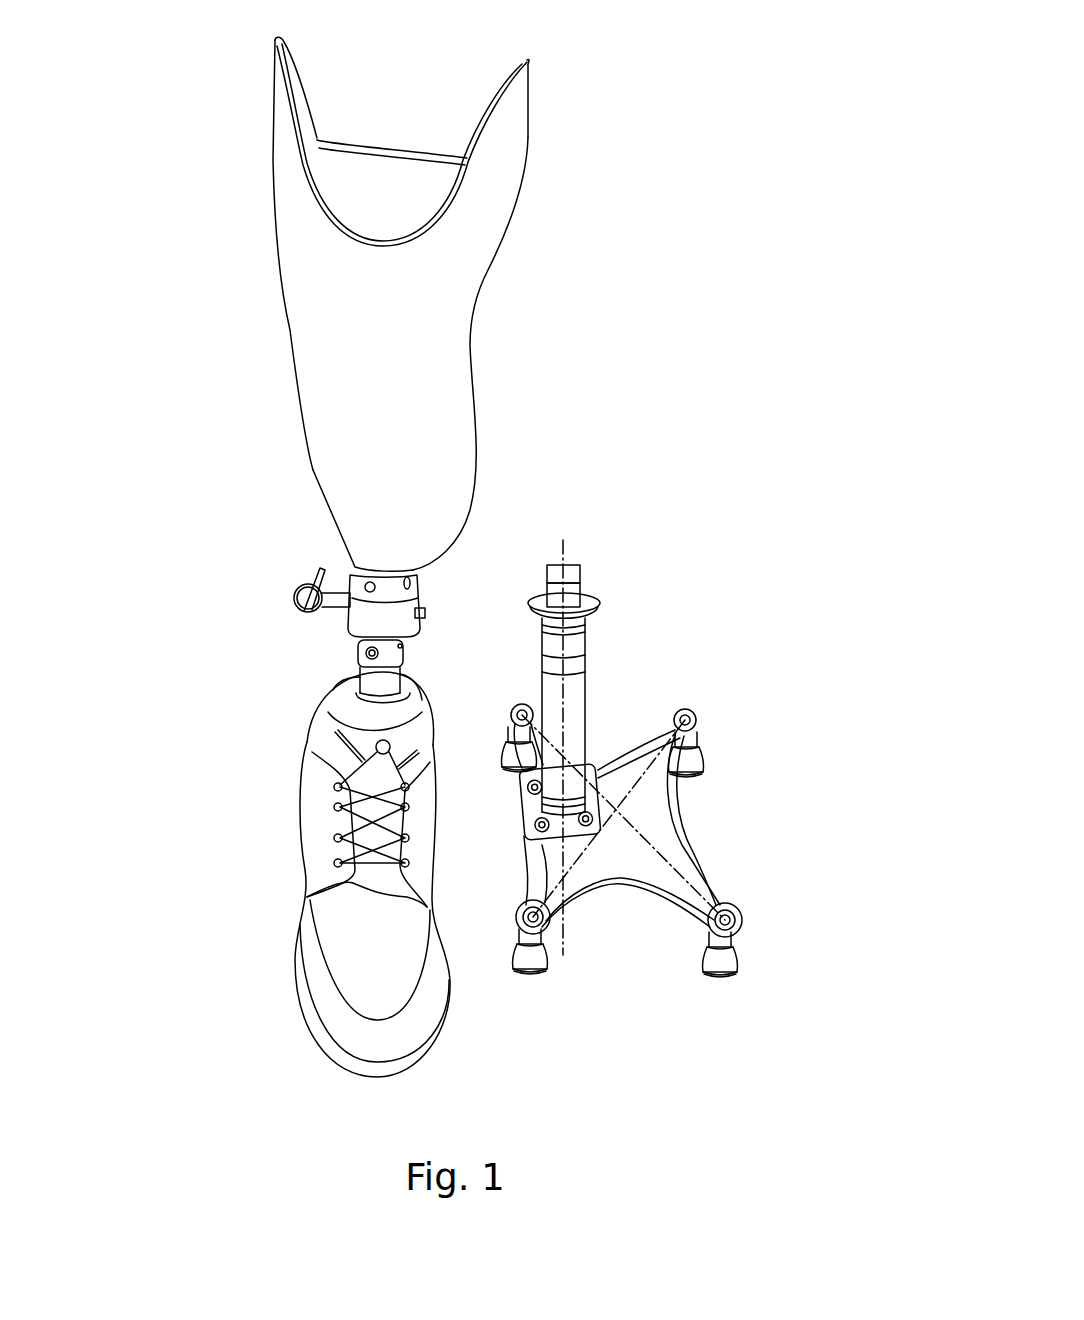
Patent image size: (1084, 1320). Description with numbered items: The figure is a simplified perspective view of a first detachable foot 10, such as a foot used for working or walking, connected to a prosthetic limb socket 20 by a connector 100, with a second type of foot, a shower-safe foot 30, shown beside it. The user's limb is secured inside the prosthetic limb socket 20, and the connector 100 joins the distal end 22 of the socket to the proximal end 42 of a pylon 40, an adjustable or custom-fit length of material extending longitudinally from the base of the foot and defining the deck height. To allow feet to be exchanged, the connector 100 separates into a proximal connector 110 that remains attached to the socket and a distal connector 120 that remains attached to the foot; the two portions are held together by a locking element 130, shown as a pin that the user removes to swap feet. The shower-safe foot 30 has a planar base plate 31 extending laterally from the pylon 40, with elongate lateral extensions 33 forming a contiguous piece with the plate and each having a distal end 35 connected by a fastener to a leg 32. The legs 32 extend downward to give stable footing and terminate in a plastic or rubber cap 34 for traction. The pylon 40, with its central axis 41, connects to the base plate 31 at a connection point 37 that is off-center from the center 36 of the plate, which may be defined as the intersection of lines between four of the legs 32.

The detachable foot 10 is at (333, 1043).
The prosthetic limb socket 20 is at (298, 295).
The distal end of the prosthetic limb socket 22 is at (358, 555).
The shower-safe foot 30 is at (655, 863).
The base plate 31 is at (627, 857).
The legs 32 is at (735, 947).
The lateral extensions 33 is at (523, 708).
The cap 34 is at (722, 975).
The distal end of the lateral extension 35 is at (532, 912).
The center of the base plate 36 is at (620, 808).
The connection point 37 is at (522, 777).
The pylon 40 is at (587, 721).
The central axis of the pylon 41 is at (568, 945).
The proximal end of the pylon 42 is at (597, 665).
The connector 100 is at (367, 636).
The proximal connector 110 is at (415, 580).
The distal connector 120 is at (350, 615).
The locking element 130 is at (294, 592).